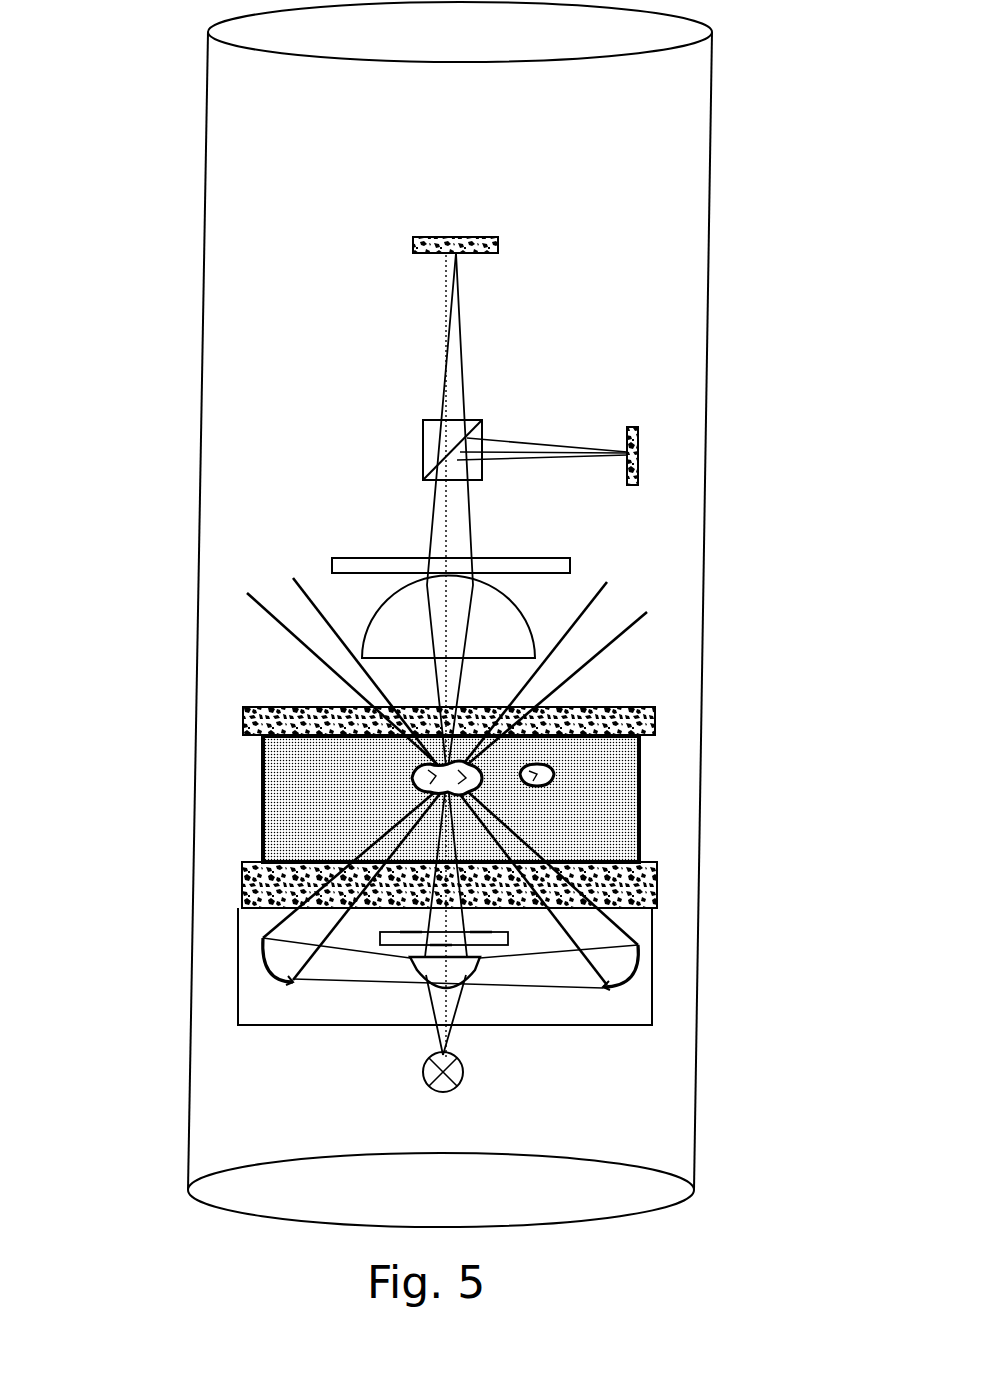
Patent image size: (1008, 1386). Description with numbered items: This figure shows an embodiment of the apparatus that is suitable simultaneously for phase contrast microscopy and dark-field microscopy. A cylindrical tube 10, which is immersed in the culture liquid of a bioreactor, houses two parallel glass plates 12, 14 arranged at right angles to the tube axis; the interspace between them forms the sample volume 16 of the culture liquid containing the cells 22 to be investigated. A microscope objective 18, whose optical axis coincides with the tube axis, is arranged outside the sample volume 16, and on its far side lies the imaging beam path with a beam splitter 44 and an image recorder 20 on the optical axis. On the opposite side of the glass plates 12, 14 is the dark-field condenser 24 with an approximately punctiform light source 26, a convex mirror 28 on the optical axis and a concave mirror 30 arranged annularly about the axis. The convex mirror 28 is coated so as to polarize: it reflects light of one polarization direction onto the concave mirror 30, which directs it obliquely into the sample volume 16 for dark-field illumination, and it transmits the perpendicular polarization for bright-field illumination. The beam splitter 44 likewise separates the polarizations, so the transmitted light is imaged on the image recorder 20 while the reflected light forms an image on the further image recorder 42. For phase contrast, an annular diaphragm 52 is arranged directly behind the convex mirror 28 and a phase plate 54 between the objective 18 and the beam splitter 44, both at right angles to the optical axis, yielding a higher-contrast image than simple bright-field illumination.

The cylindrical tube 10 is at (712, 313).
The glass plate 12 is at (655, 727).
The glass plate 14 is at (657, 895).
The sample volume 16 is at (640, 762).
The microscope objective 18 is at (505, 620).
The image recorder 20 is at (498, 246).
The cell 22 is at (478, 788).
The dark-field condenser 24 is at (236, 985).
The light source 26 is at (463, 1080).
The convex mirror 28 is at (480, 968).
The concave mirror 30 is at (633, 972).
The second image recorder 42 is at (638, 440).
The beam splitter 44 is at (423, 450).
The annular diaphragm 52 is at (508, 936).
The phase plate 54 is at (503, 558).